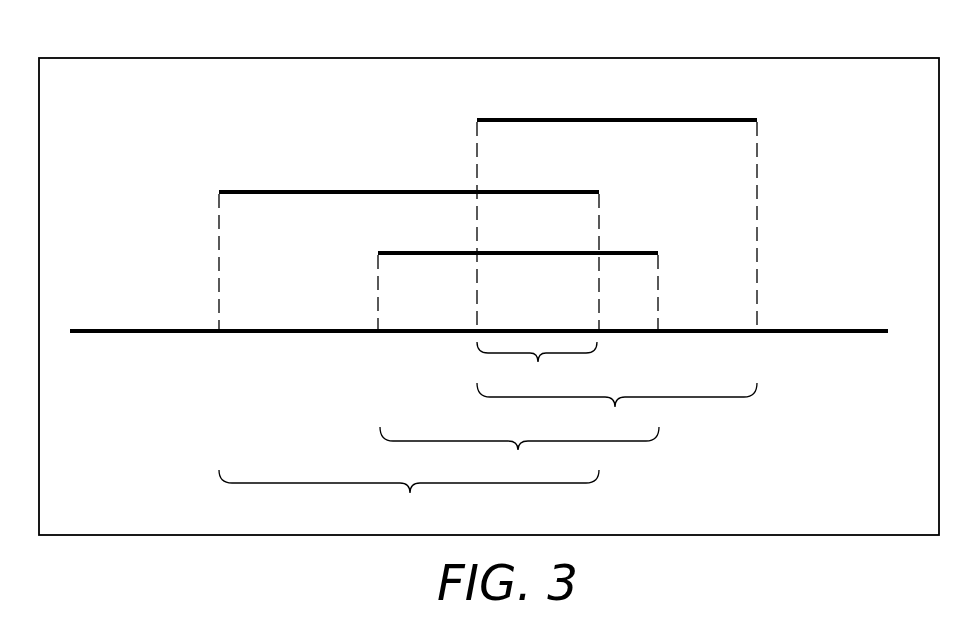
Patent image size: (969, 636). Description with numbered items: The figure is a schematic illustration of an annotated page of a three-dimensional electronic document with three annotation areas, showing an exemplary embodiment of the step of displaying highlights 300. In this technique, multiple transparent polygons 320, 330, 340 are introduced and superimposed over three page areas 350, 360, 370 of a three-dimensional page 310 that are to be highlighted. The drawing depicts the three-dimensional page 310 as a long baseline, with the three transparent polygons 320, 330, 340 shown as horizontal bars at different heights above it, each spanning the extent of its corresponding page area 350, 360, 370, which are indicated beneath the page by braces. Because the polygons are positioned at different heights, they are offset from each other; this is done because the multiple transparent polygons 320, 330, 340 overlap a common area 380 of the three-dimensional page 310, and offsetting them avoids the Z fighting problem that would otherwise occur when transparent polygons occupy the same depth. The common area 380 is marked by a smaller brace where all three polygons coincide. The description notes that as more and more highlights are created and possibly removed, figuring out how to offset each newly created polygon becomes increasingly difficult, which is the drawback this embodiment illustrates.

The step of displaying highlights 300 is at (524, 58).
The three-dimensional page 310 is at (797, 330).
The transparent polygon 320 is at (736, 119).
The transparent polygon 330 is at (560, 191).
The transparent polygon 340 is at (636, 253).
The page area 350 is at (617, 410).
The page area 360 is at (409, 497).
The page area 370 is at (519, 453).
The common area 380 is at (537, 367).